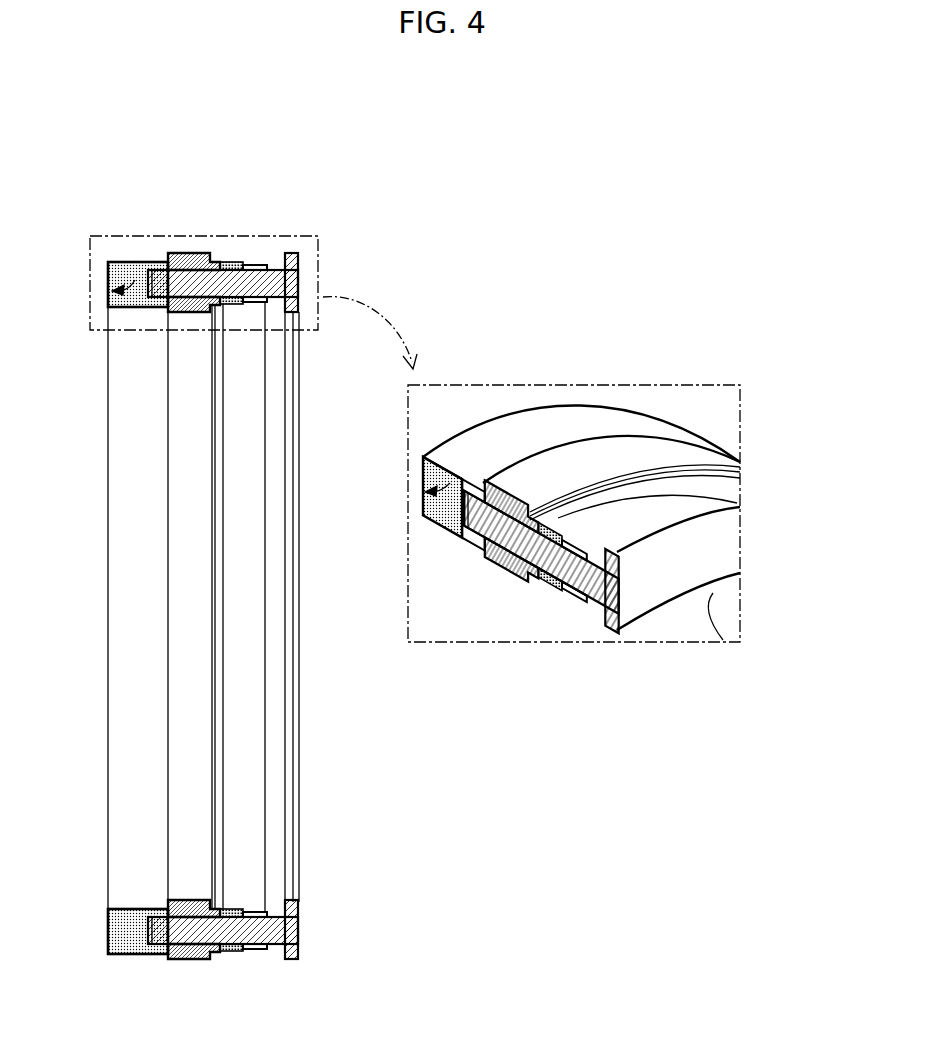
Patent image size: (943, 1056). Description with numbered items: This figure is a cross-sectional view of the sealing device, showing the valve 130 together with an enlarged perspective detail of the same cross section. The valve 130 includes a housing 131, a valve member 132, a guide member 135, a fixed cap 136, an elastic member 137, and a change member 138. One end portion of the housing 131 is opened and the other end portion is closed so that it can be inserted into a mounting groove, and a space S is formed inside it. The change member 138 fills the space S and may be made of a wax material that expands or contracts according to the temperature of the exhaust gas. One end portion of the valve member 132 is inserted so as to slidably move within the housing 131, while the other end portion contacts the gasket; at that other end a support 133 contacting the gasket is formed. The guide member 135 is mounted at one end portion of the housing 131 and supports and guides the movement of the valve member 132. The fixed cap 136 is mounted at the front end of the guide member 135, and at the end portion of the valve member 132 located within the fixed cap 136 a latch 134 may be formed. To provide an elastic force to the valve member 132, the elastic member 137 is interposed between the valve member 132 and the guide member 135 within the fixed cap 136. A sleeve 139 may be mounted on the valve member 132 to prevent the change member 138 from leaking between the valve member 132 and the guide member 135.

The valve 130 is at (286, 180).
The housing 131 is at (127, 607).
The valve member 132 is at (199, 280).
The support 133 is at (293, 258).
The latch 134 is at (243, 305).
The guide member 135 is at (172, 258).
The fixed cap 136 is at (254, 266).
The elastic member 137 is at (228, 265).
The change member 138 is at (124, 268).
The sleeve 139 is at (143, 293).
The space S is at (108, 281).